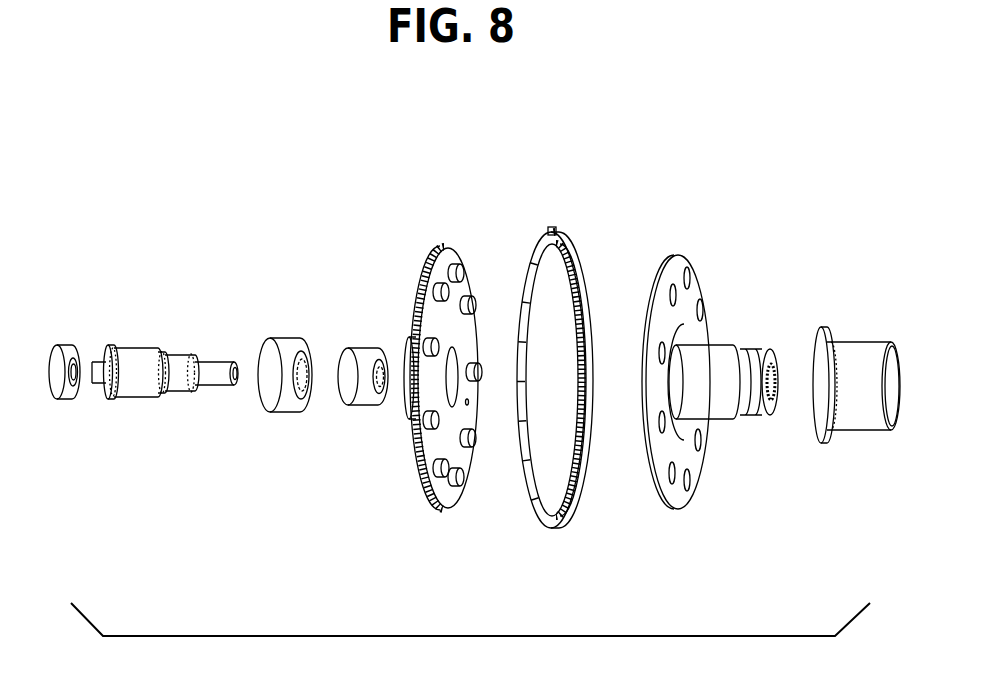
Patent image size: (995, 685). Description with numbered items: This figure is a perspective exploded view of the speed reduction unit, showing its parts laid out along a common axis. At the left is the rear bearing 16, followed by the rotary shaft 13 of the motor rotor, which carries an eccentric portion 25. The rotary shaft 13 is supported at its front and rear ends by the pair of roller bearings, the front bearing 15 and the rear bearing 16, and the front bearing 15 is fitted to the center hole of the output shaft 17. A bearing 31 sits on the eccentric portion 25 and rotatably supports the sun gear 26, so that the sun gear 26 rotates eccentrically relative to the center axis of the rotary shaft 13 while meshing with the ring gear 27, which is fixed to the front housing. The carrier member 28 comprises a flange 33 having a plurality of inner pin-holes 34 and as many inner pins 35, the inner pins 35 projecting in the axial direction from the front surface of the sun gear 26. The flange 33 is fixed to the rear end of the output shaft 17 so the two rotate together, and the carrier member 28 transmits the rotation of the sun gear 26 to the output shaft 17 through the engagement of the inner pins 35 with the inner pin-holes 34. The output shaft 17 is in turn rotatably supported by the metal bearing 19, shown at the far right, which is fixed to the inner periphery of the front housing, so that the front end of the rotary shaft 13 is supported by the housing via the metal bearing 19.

The rotary shaft 13 is at (165, 372).
The front bearing 15 is at (338, 328).
The rear bearing 16 is at (62, 395).
The output shaft 17 is at (721, 352).
The metal bearing 19 is at (858, 352).
The eccentric portion 25 is at (198, 331).
The sun gear 26 is at (458, 362).
The ring gear 27 is at (556, 530).
The carrier member 28 is at (478, 183).
The bearing 31 is at (258, 320).
The flange 33 is at (691, 368).
The inner pin-holes 34 is at (702, 300).
The inner pins 35 is at (474, 296).